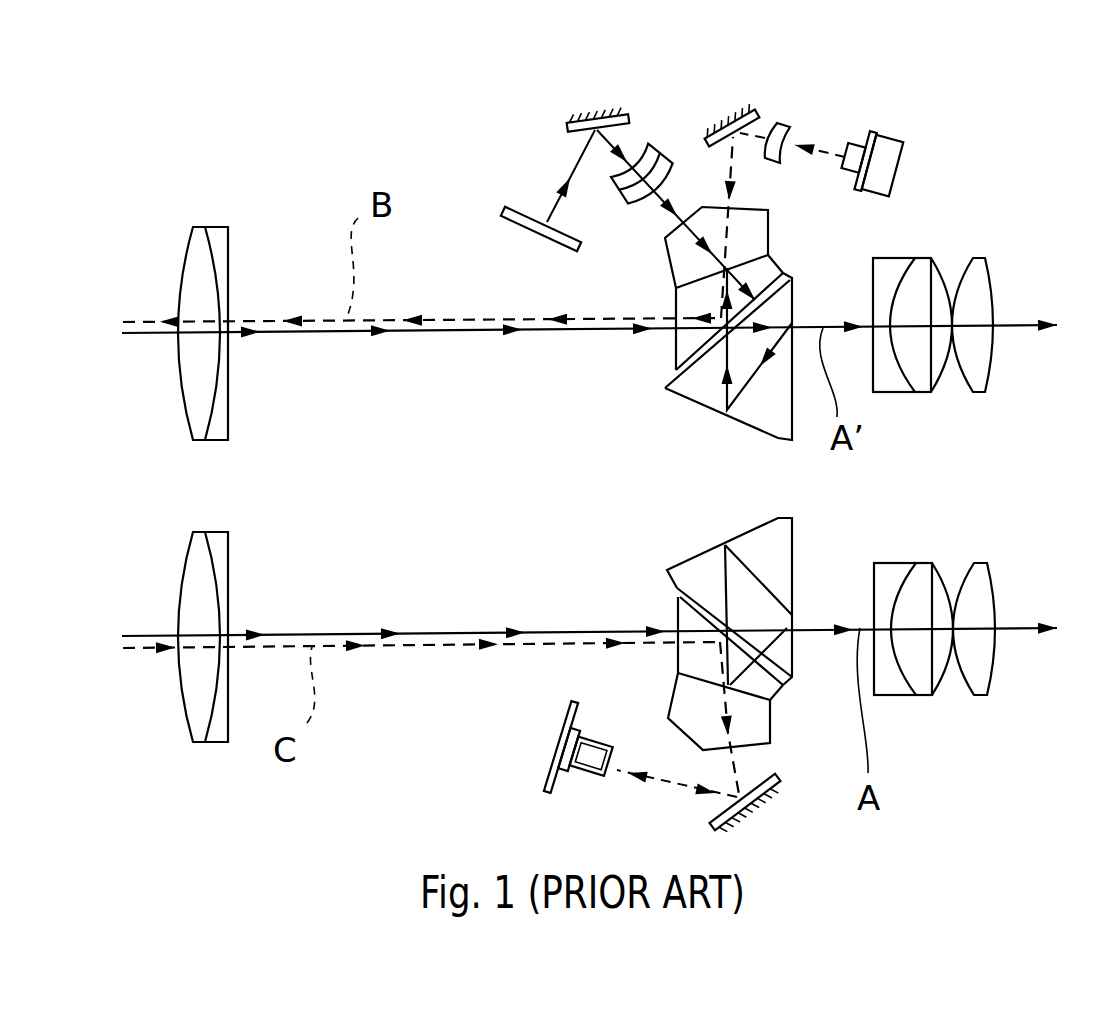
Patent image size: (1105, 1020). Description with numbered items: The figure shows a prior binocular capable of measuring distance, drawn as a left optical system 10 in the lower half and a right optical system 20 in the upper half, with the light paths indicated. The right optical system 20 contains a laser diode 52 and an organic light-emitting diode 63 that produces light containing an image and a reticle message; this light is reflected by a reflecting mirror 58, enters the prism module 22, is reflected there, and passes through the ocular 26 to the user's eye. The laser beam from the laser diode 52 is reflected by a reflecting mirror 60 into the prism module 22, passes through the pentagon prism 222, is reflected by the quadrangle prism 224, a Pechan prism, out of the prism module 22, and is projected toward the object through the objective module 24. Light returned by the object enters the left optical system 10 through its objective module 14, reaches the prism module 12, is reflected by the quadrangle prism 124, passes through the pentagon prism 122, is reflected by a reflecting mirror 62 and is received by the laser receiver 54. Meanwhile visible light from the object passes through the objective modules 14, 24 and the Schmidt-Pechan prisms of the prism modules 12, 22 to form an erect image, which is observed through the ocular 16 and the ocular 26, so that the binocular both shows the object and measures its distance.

The left optical system 10 is at (958, 717).
The prism module 12 is at (660, 634).
The objective module 14 is at (220, 543).
The ocular 16 is at (995, 655).
The right optical system 20 is at (963, 222).
The prism module 22 is at (657, 301).
The objective module 24 is at (220, 243).
The ocular 26 is at (992, 283).
The laser diode 52 is at (890, 137).
The laser receiver 54 is at (570, 777).
The reflecting mirror 58 is at (572, 120).
The reflecting mirror 60 is at (755, 110).
The reflecting mirror 62 is at (717, 817).
The organic light-emitting diode 63 is at (503, 208).
The pentagon prism 122 is at (772, 730).
The quadrangle prism 124 is at (675, 662).
The pentagon prism 222 is at (747, 222).
The quadrangle prism 224 is at (755, 273).